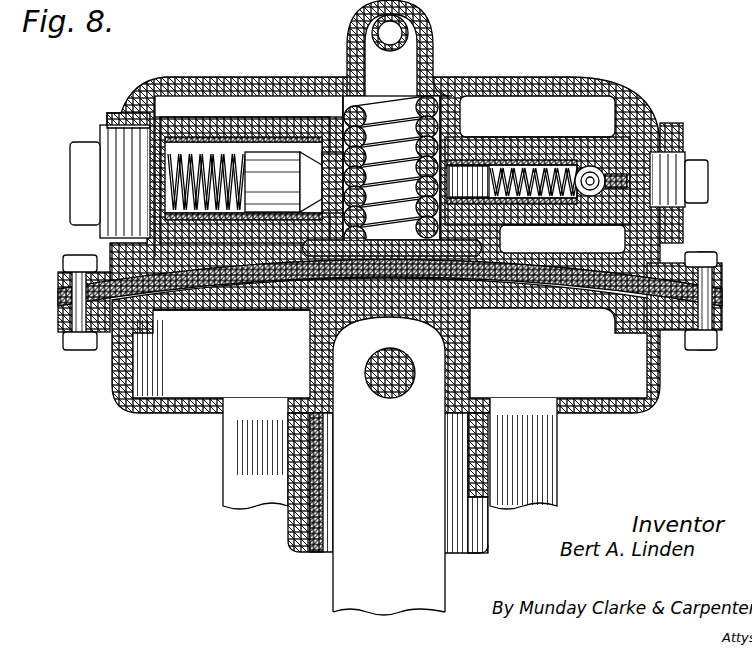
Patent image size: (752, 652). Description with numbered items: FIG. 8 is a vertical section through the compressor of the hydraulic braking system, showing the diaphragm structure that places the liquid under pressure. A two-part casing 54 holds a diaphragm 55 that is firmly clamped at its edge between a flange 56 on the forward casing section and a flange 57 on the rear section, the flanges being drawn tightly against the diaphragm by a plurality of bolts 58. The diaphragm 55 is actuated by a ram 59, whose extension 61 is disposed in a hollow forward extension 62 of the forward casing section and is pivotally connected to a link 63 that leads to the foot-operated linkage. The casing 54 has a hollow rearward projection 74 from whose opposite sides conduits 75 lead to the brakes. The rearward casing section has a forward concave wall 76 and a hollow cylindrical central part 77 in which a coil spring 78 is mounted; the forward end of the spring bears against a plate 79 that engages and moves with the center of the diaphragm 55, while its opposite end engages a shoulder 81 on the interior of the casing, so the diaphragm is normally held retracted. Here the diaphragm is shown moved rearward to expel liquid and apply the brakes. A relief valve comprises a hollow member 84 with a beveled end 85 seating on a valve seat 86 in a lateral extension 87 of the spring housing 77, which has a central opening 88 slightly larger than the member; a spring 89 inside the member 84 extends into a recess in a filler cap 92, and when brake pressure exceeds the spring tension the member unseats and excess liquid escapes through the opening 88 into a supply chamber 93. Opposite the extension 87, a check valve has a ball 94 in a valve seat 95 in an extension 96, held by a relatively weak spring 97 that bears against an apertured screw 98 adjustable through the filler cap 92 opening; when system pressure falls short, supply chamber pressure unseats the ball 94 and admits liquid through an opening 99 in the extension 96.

The two-part casing 54 is at (636, 413).
The diaphragm 55 is at (562, 283).
The flange 56 is at (60, 327).
The flange 57 is at (60, 280).
The bolts 58 is at (70, 257).
The ram 59 is at (272, 310).
The extension 61 is at (318, 533).
The hollow forward extension 62 is at (288, 522).
The link 63 is at (420, 578).
The hollow rearward projection 74 is at (347, 45).
The conduits 75 is at (400, 32).
The forward concave wall 76 is at (590, 262).
The cylindrical central part 77 is at (505, 76).
The coil spring 78 is at (345, 113).
The plate 79 is at (472, 308).
The shoulder 81 is at (440, 100).
The hollow valve member 84 is at (283, 125).
The beveled end 85 is at (305, 167).
The valve seat 86 is at (318, 172).
The lateral extension 87 is at (218, 137).
The central opening 88 is at (190, 140).
The spring 89 is at (145, 97).
The filler cap 92 is at (81, 143).
The supply chamber 93 is at (168, 112).
The ball 94 is at (597, 170).
The valve seat 95 is at (620, 178).
The extension 96 is at (508, 168).
The spring 97 is at (510, 170).
The apertured screw 98 is at (480, 165).
The opening 99 is at (650, 150).